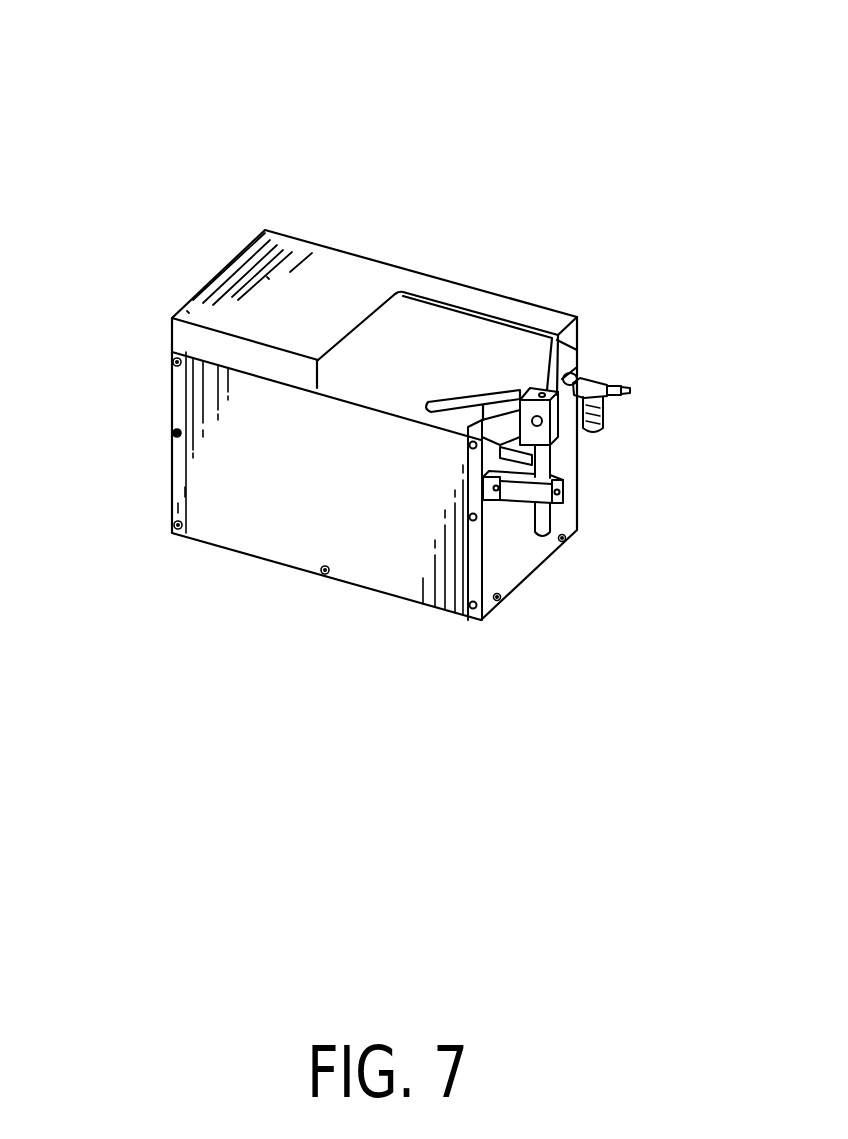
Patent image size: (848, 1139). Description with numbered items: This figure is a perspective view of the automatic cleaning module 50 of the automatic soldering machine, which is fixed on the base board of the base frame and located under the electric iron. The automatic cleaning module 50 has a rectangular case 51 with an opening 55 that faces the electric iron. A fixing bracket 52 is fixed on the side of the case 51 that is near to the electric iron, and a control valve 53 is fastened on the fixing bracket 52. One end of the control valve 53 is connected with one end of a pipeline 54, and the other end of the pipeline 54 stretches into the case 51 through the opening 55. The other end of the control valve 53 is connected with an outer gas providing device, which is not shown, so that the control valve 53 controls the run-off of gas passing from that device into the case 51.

The automatic cleaning module 50 is at (102, 55).
The rectangular case 51 is at (187, 473).
The fixing bracket 52 is at (548, 463).
The control valve 53 is at (603, 408).
The pipeline 54 is at (480, 390).
The opening 55 is at (415, 365).